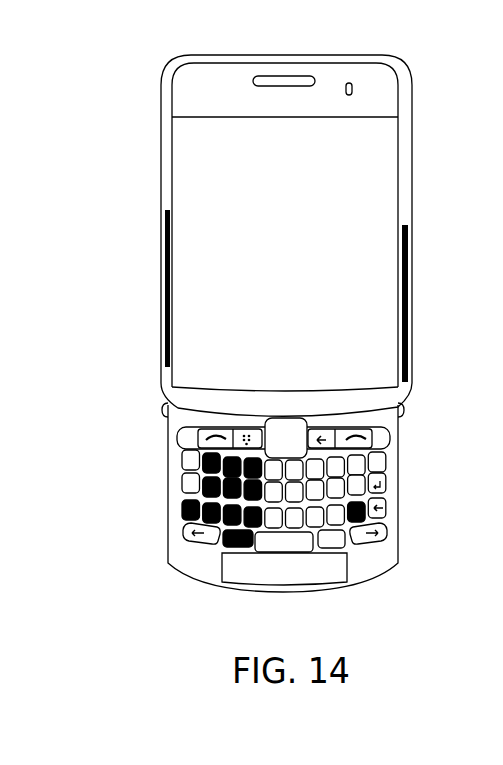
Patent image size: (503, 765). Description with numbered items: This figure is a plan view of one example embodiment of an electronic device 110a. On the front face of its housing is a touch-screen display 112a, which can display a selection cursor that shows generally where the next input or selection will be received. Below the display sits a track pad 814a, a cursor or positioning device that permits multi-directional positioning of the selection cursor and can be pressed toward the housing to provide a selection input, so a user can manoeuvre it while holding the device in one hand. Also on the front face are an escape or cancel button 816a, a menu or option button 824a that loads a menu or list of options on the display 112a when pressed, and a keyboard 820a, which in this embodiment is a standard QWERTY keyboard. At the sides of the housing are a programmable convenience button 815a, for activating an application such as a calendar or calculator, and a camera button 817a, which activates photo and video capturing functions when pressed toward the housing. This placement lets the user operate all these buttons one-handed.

The electronic device 110a is at (147, 112).
The touch-screen display 112a is at (400, 195).
The track pad 814a is at (278, 417).
The programmable convenience button 815a is at (163, 402).
The camera button 817a is at (407, 408).
The escape or cancel button 816a is at (325, 443).
The menu or option button 824a is at (240, 438).
The keyboard 820a is at (186, 543).